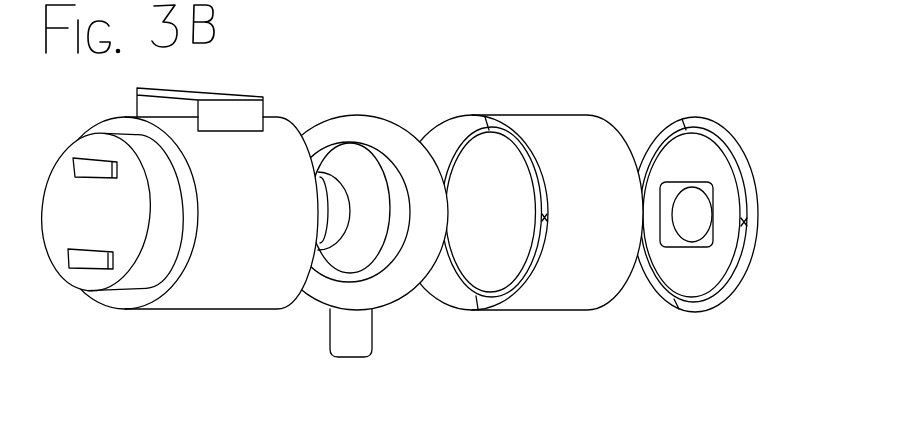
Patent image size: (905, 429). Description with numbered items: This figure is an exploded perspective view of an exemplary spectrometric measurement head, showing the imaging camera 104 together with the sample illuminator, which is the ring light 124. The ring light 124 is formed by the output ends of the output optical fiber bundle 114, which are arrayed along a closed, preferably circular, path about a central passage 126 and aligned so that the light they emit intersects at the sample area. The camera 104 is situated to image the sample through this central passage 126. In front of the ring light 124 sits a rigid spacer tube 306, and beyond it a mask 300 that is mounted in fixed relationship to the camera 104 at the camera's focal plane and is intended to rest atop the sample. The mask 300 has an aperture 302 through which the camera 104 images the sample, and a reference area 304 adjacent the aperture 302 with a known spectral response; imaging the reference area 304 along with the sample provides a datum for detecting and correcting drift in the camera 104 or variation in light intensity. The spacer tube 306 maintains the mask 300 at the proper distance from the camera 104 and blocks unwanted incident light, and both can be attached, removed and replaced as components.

The camera 104 is at (265, 157).
The output optical fiber bundle 114 is at (371, 332).
The ring light 124 is at (380, 124).
The central passage 126 is at (364, 193).
The mask 300 is at (712, 124).
The aperture 302 is at (700, 208).
The reference area 304 is at (713, 243).
The spacer tube 306 is at (550, 127).